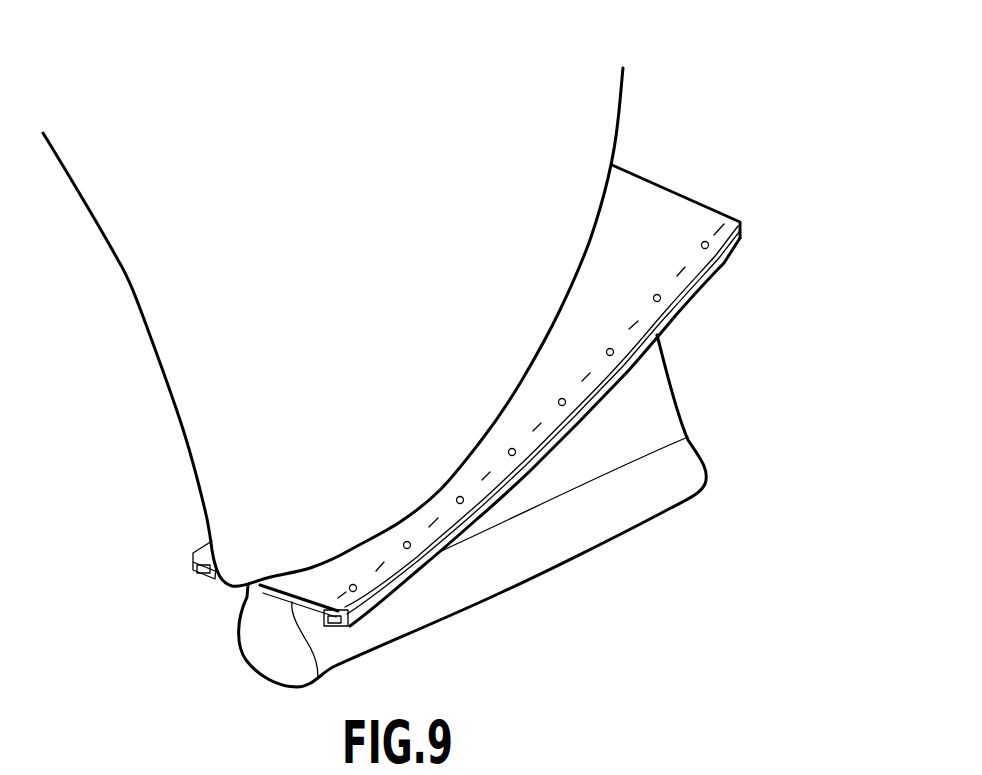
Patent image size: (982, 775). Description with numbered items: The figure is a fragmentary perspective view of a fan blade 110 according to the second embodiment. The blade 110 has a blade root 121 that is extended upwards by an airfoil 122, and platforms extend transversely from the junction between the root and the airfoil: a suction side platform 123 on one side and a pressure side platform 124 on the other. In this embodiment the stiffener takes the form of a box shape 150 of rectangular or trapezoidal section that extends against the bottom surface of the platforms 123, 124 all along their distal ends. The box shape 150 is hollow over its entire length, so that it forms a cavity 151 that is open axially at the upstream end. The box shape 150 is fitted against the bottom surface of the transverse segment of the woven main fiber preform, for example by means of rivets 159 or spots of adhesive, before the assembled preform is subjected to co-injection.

The blade 110 is at (778, 63).
The blade root 121 is at (263, 653).
The airfoil 122 is at (168, 310).
The suction side platform 123 is at (658, 208).
The pressure side platform 124 is at (207, 550).
The box shape 150 is at (712, 287).
The cavity 151 is at (332, 628).
The rivets 159 is at (611, 353).